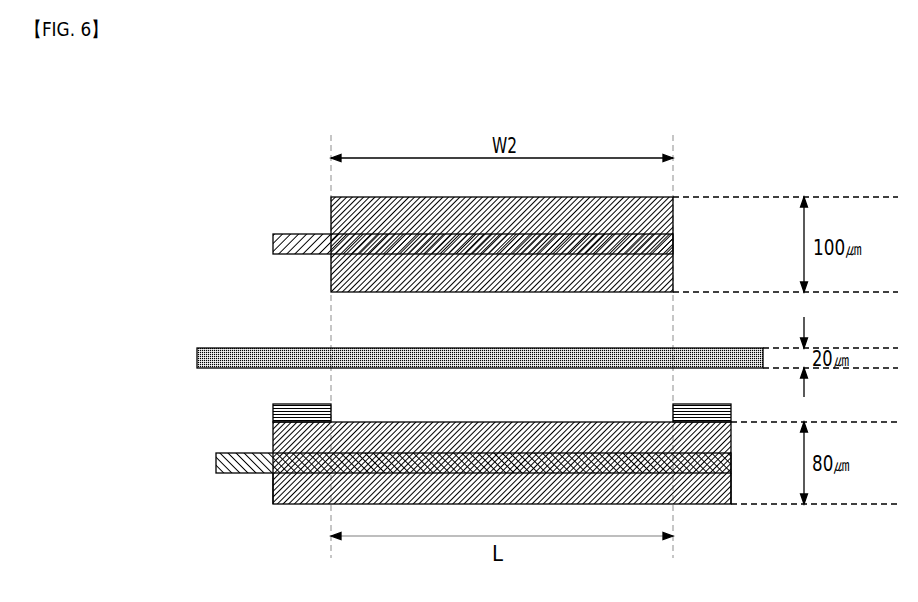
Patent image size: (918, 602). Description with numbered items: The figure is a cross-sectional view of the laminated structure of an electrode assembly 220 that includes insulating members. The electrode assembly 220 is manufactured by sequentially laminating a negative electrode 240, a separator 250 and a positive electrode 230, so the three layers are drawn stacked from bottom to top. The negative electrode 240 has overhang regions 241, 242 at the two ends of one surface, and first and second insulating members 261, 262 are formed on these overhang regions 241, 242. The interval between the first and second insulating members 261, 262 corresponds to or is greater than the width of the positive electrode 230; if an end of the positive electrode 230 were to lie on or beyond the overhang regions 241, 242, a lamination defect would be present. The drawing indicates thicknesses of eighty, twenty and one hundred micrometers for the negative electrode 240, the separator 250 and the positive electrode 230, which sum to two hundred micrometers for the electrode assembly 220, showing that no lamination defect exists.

The electrode assembly 220 is at (173, 128).
The positive electrode 230 is at (259, 248).
The separator 250 is at (197, 358).
The first insulating member 261 is at (273, 413).
The second insulating member 262 is at (731, 412).
The negative electrode 240 is at (247, 494).
The overhang region 241 is at (294, 490).
The overhang region 242 is at (710, 490).